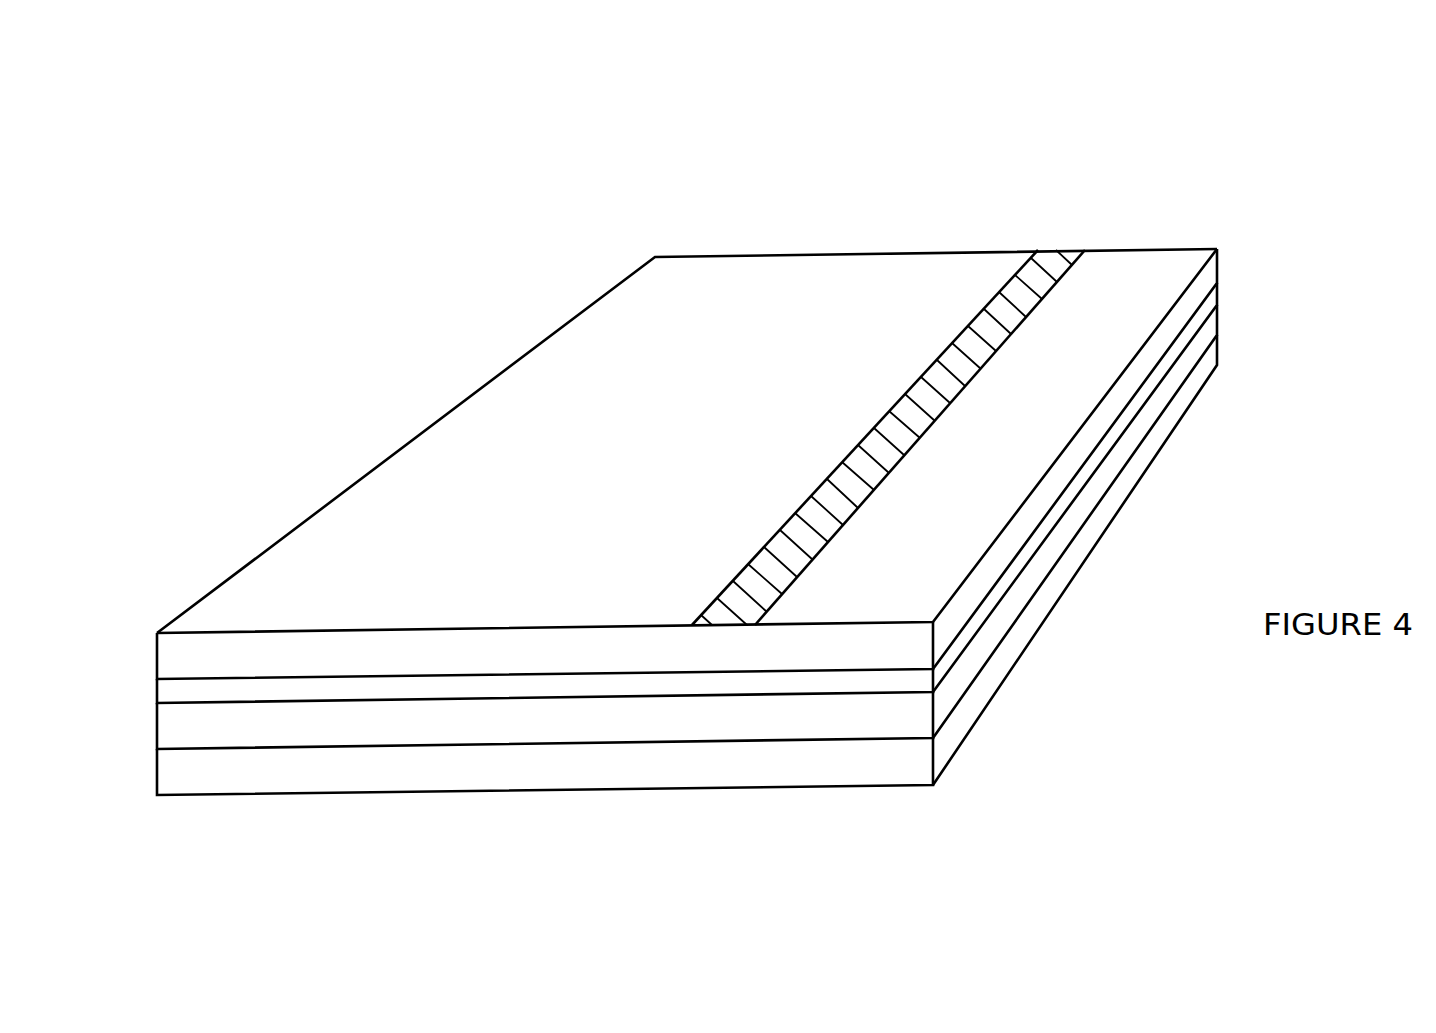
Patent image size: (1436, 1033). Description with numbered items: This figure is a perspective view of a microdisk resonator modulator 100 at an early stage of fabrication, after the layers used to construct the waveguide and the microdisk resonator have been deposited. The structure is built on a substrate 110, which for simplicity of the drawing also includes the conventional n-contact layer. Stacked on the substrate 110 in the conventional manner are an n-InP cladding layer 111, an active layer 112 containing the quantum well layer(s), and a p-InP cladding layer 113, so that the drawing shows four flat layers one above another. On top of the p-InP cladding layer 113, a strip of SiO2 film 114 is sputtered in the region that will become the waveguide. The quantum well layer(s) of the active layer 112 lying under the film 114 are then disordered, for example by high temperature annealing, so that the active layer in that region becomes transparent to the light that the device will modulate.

The microdisk resonator modulator 100 is at (310, 138).
The substrate 110 is at (907, 773).
The n-InP cladding layer 111 is at (933, 717).
The active layer 112 is at (913, 680).
The p-InP cladding layer 113 is at (908, 640).
The SiO2 film 114 is at (1022, 272).